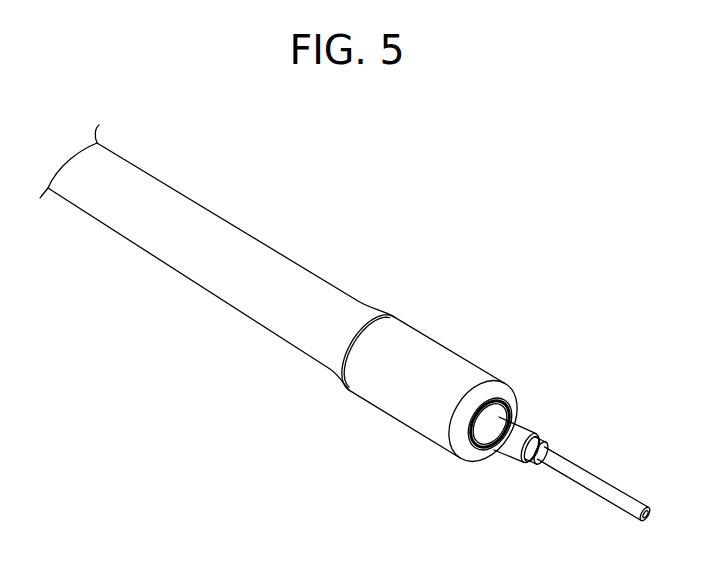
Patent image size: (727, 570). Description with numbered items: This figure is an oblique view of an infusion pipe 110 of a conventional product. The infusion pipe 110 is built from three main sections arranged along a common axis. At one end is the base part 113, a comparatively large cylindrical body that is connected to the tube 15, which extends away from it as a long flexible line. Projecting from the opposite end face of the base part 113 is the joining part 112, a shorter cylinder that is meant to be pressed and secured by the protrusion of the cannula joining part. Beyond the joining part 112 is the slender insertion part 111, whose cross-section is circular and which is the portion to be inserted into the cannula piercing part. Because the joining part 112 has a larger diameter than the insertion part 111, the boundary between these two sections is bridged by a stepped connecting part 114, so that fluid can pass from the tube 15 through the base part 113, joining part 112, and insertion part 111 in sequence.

The tube 15 is at (218, 252).
The infusion pipe 110 is at (497, 360).
The insertion part 111 is at (593, 483).
The joining part 112 is at (513, 433).
The base part 113 is at (410, 403).
The connecting part 114 is at (533, 462).